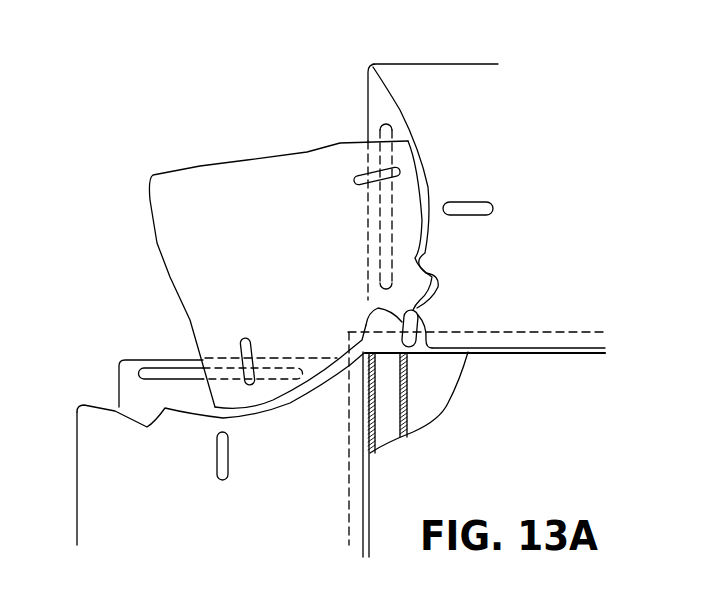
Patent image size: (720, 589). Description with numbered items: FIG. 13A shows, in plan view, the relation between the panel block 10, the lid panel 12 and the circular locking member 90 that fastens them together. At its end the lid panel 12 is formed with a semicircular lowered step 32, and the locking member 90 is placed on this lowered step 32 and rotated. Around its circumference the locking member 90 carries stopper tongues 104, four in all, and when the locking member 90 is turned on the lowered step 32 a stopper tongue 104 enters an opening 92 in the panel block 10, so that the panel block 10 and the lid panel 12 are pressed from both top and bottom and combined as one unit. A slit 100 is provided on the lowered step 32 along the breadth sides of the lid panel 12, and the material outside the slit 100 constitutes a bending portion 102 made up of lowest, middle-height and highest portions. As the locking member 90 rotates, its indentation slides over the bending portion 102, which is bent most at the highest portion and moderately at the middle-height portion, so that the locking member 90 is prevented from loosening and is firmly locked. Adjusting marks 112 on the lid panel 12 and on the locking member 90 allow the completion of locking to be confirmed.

The panel block 10 is at (387, 492).
The lid panel 12 is at (443, 77).
The lowered step 32 is at (380, 103).
The locking member 90 is at (243, 172).
The opening 92 is at (387, 398).
The slit 100 is at (167, 407).
The bending portion 102 is at (182, 358).
The stopper tongue 104 is at (427, 316).
The adjusting marks 112 is at (252, 342).